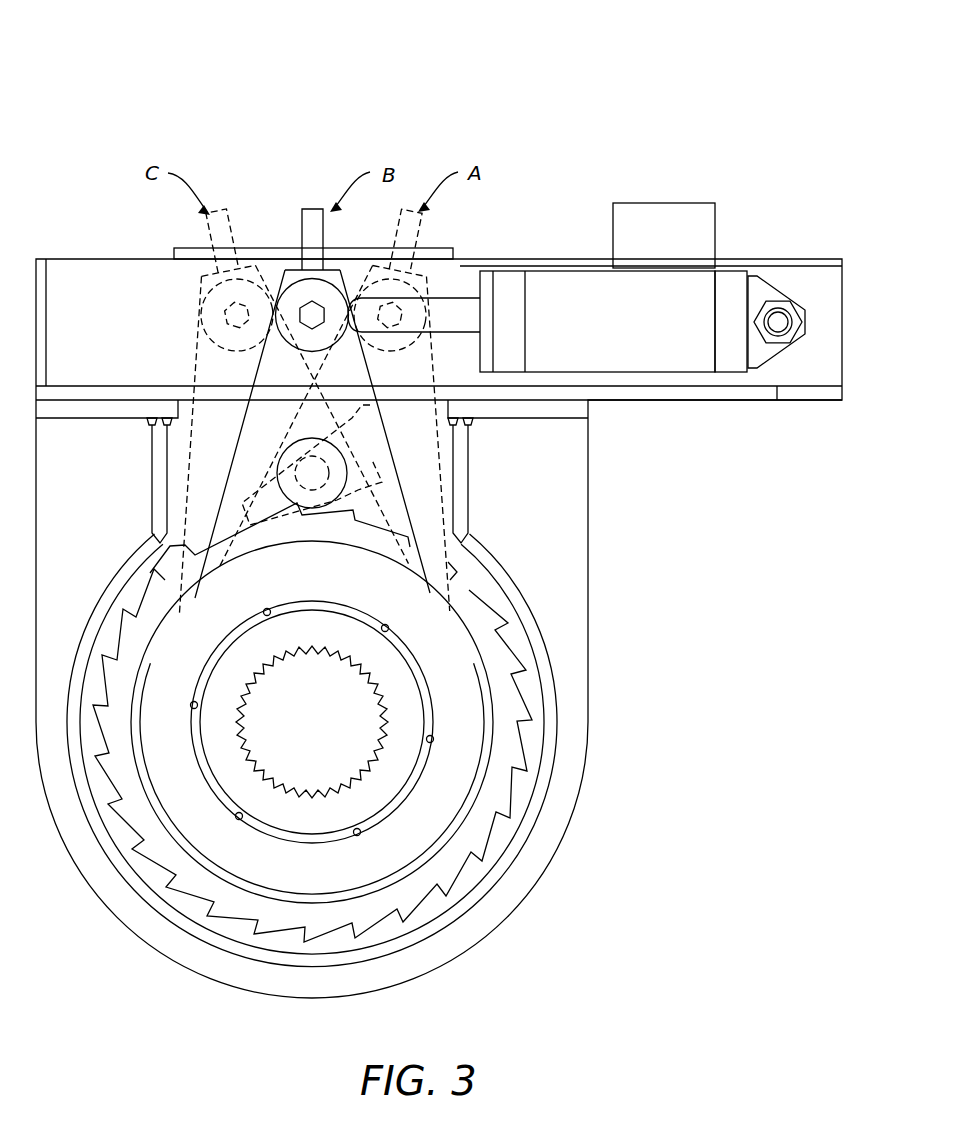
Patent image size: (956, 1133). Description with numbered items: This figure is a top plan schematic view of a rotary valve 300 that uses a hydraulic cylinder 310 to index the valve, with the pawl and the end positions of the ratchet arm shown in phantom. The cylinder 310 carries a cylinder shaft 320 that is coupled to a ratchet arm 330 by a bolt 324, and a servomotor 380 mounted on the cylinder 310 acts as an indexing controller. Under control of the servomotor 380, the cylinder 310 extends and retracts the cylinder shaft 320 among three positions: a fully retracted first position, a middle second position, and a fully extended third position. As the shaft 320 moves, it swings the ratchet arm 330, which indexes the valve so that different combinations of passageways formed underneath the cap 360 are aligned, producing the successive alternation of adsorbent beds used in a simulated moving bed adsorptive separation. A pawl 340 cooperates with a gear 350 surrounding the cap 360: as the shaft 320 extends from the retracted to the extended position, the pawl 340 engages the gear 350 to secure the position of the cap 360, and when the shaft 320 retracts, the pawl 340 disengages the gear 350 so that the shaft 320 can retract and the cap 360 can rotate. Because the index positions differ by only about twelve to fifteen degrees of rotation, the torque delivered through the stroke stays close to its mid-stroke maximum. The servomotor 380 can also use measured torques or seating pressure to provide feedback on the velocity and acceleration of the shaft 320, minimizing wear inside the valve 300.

The rotary valve 300 is at (757, 62).
The cylinder 310 is at (687, 355).
The cylinder shaft 320 is at (452, 297).
The bolt 324 is at (308, 308).
The ratchet arm 330 is at (382, 498).
The pawl 340 is at (370, 450).
The gear 350 is at (497, 662).
The cap 360 is at (400, 765).
The servomotor 380 is at (700, 205).